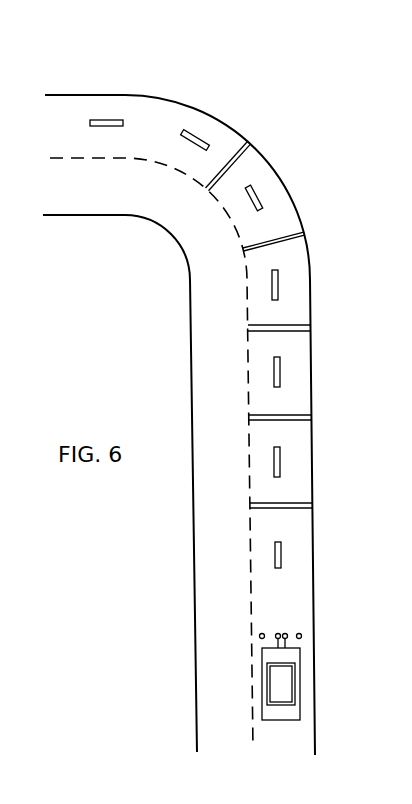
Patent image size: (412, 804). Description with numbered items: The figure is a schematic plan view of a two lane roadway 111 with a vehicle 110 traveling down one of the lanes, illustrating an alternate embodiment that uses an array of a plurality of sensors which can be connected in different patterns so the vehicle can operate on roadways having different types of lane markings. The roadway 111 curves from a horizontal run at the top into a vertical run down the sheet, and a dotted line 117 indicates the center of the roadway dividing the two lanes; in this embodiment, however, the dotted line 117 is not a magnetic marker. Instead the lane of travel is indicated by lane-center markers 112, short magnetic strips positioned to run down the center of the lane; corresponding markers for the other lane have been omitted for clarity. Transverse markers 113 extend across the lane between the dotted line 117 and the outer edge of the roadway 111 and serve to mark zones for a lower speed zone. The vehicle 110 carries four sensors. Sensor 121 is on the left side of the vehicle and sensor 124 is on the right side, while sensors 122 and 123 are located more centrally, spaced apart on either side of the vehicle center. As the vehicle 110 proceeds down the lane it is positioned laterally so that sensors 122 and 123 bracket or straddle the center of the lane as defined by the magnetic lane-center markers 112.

The vehicle 110 is at (300, 677).
The roadway 111 is at (201, 693).
The lane-center markers 112 is at (258, 195).
The transverse markers 113 is at (237, 143).
The dotted line 117 is at (251, 532).
The sensor 121 is at (259, 636).
The sensor 122 is at (276, 634).
The sensor 123 is at (287, 634).
The sensor 124 is at (302, 636).